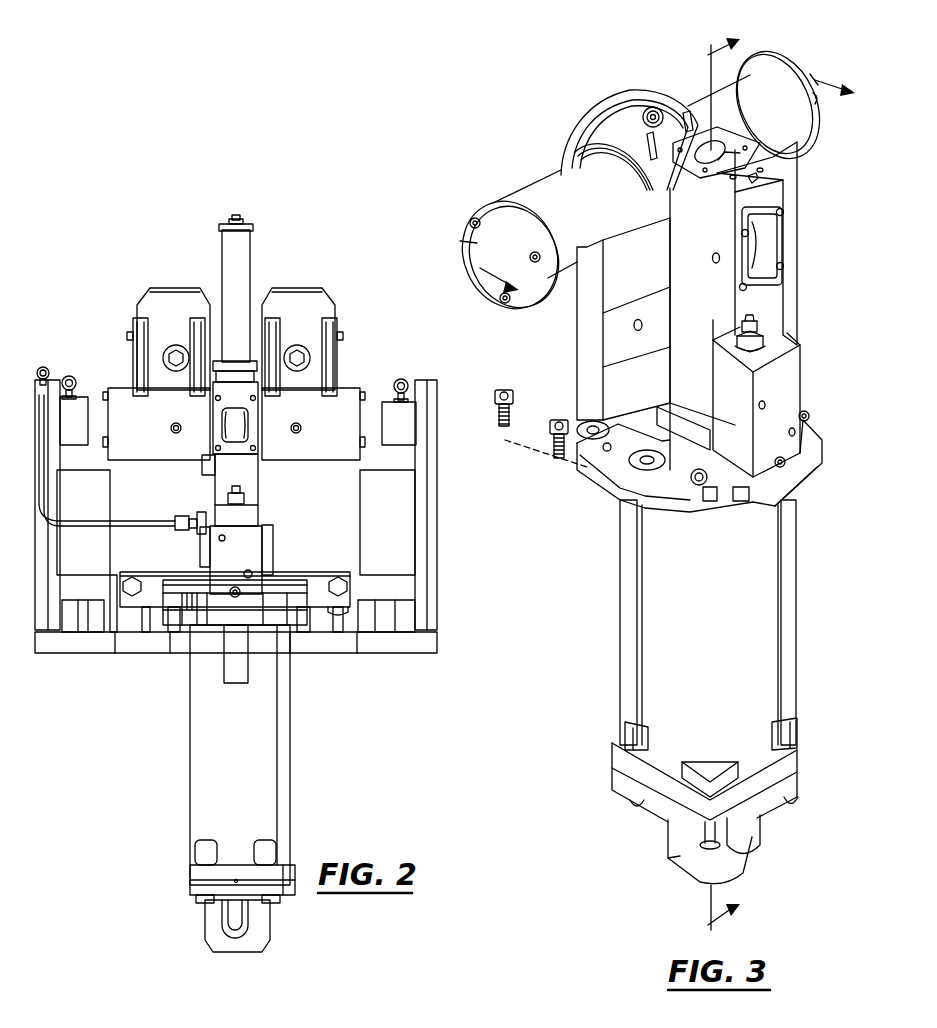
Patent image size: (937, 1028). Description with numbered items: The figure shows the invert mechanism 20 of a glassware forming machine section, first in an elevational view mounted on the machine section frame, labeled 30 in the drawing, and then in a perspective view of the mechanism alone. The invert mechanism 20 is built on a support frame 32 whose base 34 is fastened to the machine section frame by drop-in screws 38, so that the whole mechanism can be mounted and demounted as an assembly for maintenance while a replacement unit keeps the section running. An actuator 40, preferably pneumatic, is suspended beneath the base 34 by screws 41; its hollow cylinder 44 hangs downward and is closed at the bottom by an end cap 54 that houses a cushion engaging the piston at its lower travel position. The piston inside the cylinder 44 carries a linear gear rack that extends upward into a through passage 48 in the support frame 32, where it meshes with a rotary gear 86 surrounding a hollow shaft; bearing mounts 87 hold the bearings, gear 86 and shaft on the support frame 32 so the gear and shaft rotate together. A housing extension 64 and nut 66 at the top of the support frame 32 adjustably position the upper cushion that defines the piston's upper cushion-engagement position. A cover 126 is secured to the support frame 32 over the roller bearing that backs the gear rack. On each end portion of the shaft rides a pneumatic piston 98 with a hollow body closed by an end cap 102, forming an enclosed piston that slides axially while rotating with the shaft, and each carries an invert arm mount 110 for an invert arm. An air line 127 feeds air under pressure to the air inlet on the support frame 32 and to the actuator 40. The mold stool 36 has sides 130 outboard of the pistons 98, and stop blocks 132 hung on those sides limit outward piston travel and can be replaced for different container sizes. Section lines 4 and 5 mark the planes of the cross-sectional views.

In FIG. 2, the invert mechanism 20 is at (306, 264).
In FIG. 3, the invert mechanism 20 is at (492, 100).
In FIG. 2, the left frame member 30 is at (46, 557).
In FIG. 2, the support frame 32 is at (257, 230).
In FIG. 3, the support frame 32 is at (812, 362).
In FIG. 2, the base 34 is at (170, 616).
In FIG. 3, the base 34 is at (808, 407).
In FIG. 2, the mold stool 36 is at (452, 552).
In FIG. 3, the drop-in screws 38 is at (568, 425).
In FIG. 2, the actuator 40 is at (186, 796).
In FIG. 3, the actuator 40 is at (628, 664).
In FIG. 3, the screws 41 is at (810, 418).
In FIG. 2, the hollow cylinder 44 is at (200, 745).
In FIG. 3, the hollow cylinder 44 is at (762, 598).
In FIG. 3, the through passage 48 is at (716, 152).
In FIG. 2, the end cap 54 is at (200, 886).
In FIG. 3, the end cap 54 is at (790, 787).
In FIG. 3, the housing extension 64 is at (754, 322).
In FIG. 3, the nut 66 is at (766, 338).
In FIG. 3, the gear 86 is at (610, 92).
In FIG. 3, the bearing mounts 87 is at (648, 92).
In FIG. 2, the pneumatic piston 98 is at (118, 395).
In FIG. 3, the pneumatic piston 98 is at (698, 100).
In FIG. 3, the end cap 102 is at (792, 65).
In FIG. 2, the invert arm mount 110 is at (172, 305).
In FIG. 3, the invert arm mount 110 is at (648, 372).
In FIG. 2, the cover 126 is at (256, 440).
In FIG. 3, the cover 126 is at (790, 236).
In FIG. 2, the air line 127 is at (148, 520).
In FIG. 2, the sides 130 is at (432, 518).
In FIG. 2, the stop blocks 132 is at (82, 405).
In FIG. 3, the section line 4- 4 is at (664, 190).
In FIG. 3, the section line 5- 5 is at (735, 478).